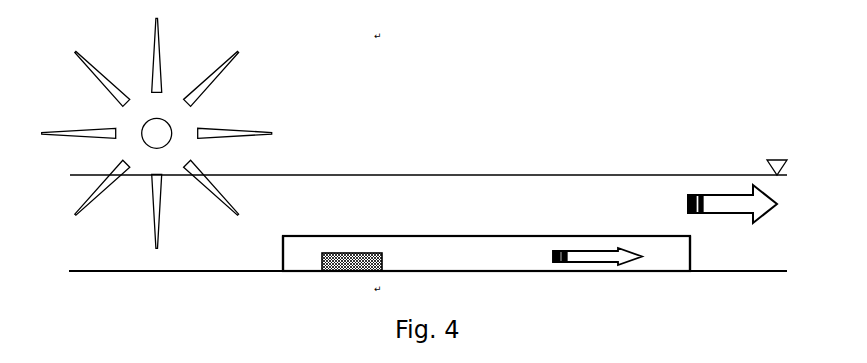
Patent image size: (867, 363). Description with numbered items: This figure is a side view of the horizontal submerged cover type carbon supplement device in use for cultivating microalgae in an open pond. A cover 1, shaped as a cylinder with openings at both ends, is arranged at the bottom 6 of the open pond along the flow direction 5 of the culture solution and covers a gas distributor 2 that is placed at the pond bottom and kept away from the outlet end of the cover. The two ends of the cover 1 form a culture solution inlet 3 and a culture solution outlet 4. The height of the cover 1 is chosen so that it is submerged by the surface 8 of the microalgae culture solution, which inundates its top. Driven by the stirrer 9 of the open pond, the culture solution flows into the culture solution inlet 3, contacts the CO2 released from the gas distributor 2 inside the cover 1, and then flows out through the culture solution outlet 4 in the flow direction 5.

The cover 1 is at (341, 228).
The gas distributor 2 is at (372, 247).
The culture solution inlet 3 is at (274, 245).
The culture solution outlet 4 is at (701, 249).
The flow direction of culture solution 5 is at (610, 240).
The bottom of an open pond 6 is at (158, 262).
The surface of microalgae culture solution 8 is at (514, 169).
The stirrer 9 is at (226, 87).